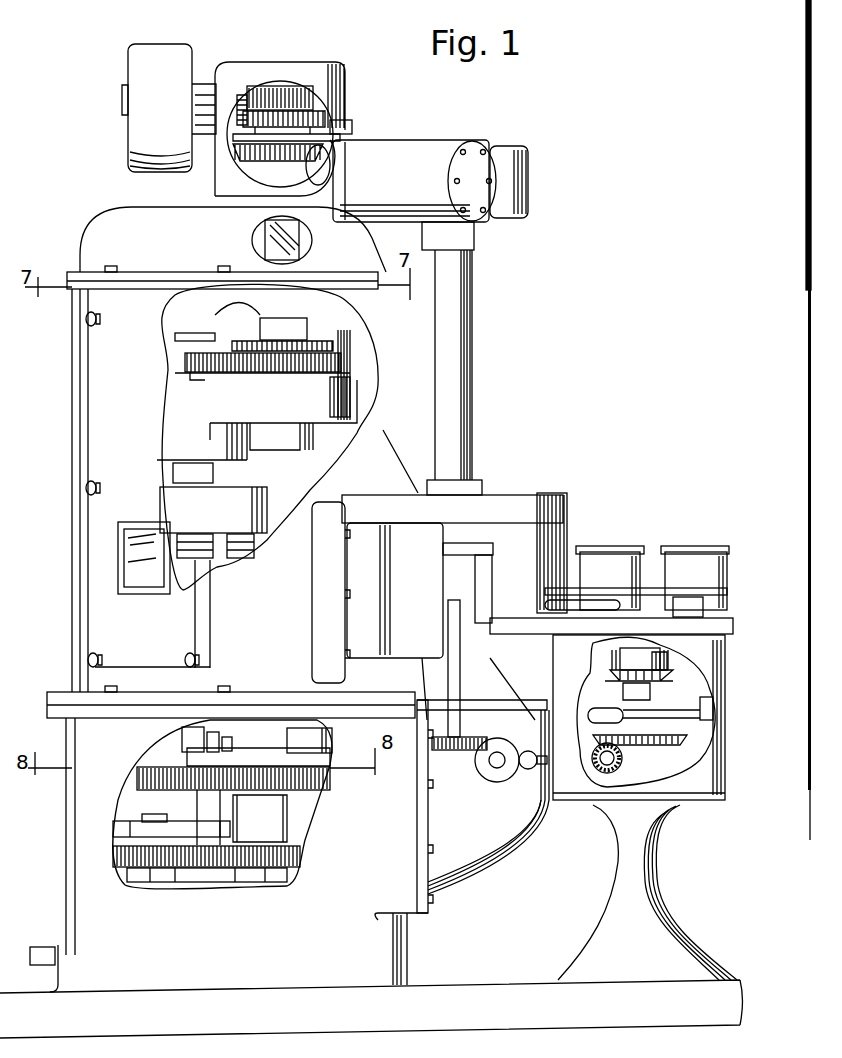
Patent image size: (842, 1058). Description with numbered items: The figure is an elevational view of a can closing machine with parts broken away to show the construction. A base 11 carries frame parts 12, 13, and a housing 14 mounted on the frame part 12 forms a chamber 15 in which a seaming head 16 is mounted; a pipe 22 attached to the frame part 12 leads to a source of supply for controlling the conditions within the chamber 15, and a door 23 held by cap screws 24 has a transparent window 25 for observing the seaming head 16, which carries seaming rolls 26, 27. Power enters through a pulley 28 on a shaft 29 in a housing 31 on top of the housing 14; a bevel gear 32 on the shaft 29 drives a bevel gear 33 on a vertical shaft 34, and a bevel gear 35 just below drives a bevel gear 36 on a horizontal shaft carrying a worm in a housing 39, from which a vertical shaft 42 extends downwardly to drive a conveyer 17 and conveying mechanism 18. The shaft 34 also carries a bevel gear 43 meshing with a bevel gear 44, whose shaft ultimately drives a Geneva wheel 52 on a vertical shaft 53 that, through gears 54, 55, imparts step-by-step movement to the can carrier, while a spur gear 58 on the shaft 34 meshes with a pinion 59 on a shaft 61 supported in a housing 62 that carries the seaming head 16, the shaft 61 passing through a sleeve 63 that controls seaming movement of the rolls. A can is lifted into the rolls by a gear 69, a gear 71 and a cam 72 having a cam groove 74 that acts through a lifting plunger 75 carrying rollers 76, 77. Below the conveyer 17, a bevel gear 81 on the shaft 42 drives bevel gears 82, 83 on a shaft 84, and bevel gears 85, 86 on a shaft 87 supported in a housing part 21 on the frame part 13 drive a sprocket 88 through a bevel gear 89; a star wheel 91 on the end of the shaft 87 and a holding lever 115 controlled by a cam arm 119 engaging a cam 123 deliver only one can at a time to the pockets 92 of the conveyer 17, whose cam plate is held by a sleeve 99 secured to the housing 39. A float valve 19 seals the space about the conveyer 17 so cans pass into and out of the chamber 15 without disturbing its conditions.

The base 11 is at (300, 1032).
The frame part 12 is at (405, 887).
The frame part 13 is at (668, 880).
The housing 14 is at (70, 437).
The chamber 15 is at (325, 437).
The seaming head 16 is at (180, 505).
The conveyer 17 is at (565, 540).
The conveying mechanism 18 is at (620, 628).
The float valve 19 is at (430, 540).
The housing part 21 is at (703, 772).
The pipe 22 is at (42, 945).
The door 23 is at (113, 630).
The cap screws 24 is at (100, 322).
The transparent window 25 is at (118, 552).
The seaming rolls 26 is at (198, 533).
The seaming rolls 27 is at (245, 534).
The pulley 28 is at (178, 60).
The shaft 29 is at (282, 110).
The housing 31 is at (345, 90).
The bevel gear 32 is at (257, 90).
The bevel gear 33 is at (352, 124).
The vertical shaft 34 is at (305, 318).
The bevel gear 35 is at (352, 152).
The bevel gear 36 is at (330, 168).
The housing 39 is at (440, 160).
The vertical shaft 42 is at (467, 752).
The bevel gear 43 is at (335, 345).
The bevel gear 44 is at (238, 340).
The Geneva wheel 52 is at (113, 829).
The vertical shaft 53 is at (150, 814).
The gear 54 is at (165, 870).
The gear 55 is at (240, 884).
The spur gear 58 is at (352, 360).
The pinion 59 is at (188, 378).
The shaft 61 is at (185, 342).
The housing 62 is at (350, 395).
The sleeve 63 is at (213, 470).
The gear 69 is at (340, 785).
The gear 71 is at (135, 790).
The cam 72 is at (262, 750).
The cam groove 74 is at (300, 735).
The lifting plunger 75 is at (182, 736).
The roller 76 is at (213, 735).
The roller 77 is at (230, 740).
The bevel gear 81 is at (468, 752).
The bevel gear 82 is at (480, 800).
The bevel gear 83 is at (622, 765).
The shaft 84 is at (522, 770).
The bevel gear 85 is at (585, 732).
The bevel gear 86 is at (580, 662).
The shaft 87 is at (640, 748).
The sprocket 88 is at (668, 662).
The bevel gear 89 is at (660, 656).
The star wheel 91 is at (690, 590).
The pockets 92 is at (460, 548).
The sleeve 99 is at (472, 300).
The holding lever 115 is at (712, 608).
The cam arm 119 is at (660, 713).
The cam 123 is at (700, 726).